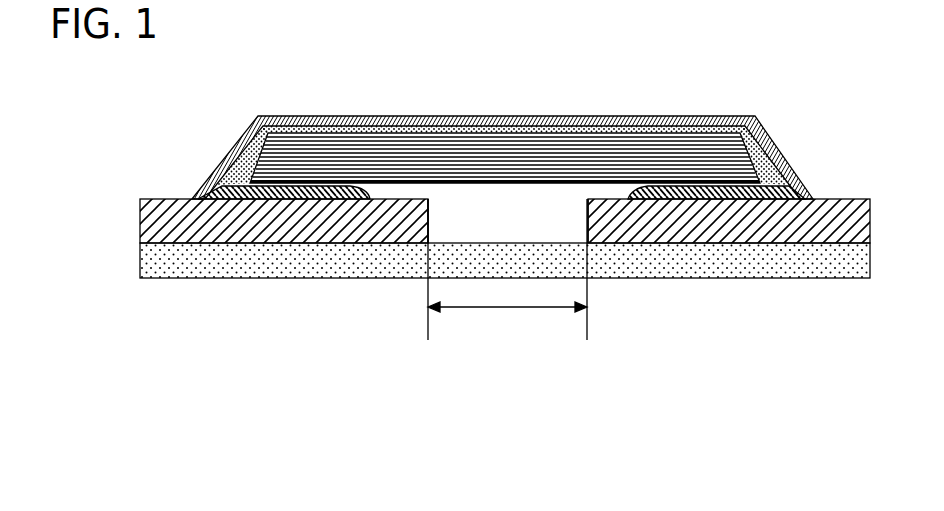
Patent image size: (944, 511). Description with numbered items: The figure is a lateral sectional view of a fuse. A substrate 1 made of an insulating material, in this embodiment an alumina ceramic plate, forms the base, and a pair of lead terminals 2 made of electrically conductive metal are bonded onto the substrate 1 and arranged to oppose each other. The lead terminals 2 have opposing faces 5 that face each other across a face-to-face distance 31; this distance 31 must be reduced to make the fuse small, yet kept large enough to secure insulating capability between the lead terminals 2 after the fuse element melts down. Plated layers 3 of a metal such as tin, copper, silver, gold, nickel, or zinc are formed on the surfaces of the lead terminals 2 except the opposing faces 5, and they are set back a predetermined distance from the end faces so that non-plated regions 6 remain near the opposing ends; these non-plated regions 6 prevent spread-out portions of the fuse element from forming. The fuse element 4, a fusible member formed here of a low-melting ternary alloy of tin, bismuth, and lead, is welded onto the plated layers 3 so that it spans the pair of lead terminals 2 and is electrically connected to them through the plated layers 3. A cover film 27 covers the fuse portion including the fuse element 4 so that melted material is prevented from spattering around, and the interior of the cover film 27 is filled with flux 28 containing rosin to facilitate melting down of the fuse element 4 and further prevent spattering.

The substrate 1 is at (770, 263).
The lead terminals 2 is at (180, 220).
The plated layers 3 is at (230, 188).
The fuse element 4 is at (647, 158).
The opposing faces 5 is at (426, 243).
The non-plated regions 6 is at (378, 200).
The cover film 27 is at (417, 117).
The flux 28 is at (553, 131).
The face-to-face distance 31 is at (518, 307).